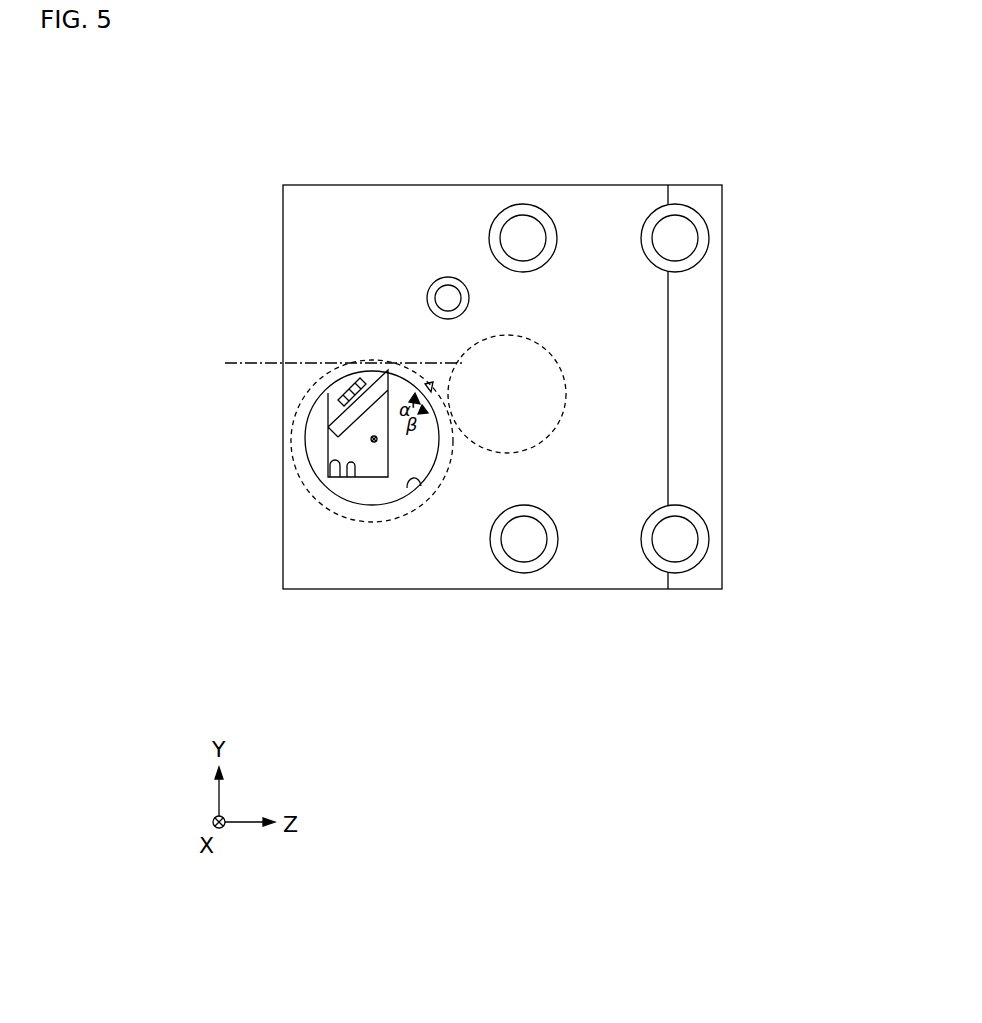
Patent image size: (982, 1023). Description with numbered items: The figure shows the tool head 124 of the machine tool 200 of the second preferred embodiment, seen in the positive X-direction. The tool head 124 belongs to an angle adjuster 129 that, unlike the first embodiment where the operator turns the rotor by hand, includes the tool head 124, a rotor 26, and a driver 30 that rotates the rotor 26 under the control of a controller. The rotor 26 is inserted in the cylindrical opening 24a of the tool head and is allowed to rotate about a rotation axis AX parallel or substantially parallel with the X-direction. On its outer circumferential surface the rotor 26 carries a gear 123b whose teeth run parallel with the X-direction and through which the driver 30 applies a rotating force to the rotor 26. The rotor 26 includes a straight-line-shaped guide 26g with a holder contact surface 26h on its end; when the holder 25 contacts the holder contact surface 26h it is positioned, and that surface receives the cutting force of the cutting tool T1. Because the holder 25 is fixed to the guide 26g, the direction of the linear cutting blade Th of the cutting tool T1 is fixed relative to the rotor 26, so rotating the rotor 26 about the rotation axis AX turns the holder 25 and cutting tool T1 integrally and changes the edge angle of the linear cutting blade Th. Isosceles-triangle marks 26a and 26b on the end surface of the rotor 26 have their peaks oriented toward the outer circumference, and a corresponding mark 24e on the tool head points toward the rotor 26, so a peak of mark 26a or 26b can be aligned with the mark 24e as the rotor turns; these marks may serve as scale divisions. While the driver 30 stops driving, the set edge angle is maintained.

The machine tool 200 is at (806, 54).
The angle adjuster 129 is at (236, 186).
The tool head 124 is at (648, 193).
The gear 123b is at (390, 367).
The driver 30 is at (566, 380).
The mark 24e is at (433, 388).
The mark 26a is at (414, 392).
The mark 26b is at (427, 409).
The rotor 26 is at (434, 459).
The opening 24a is at (413, 480).
The holder 25 is at (370, 466).
The guide 26g is at (333, 463).
The holder contact surface 26h is at (349, 464).
The rotation axis AX is at (375, 442).
The linear cutting blade Th is at (386, 366).
The cutting tool T1 is at (337, 398).